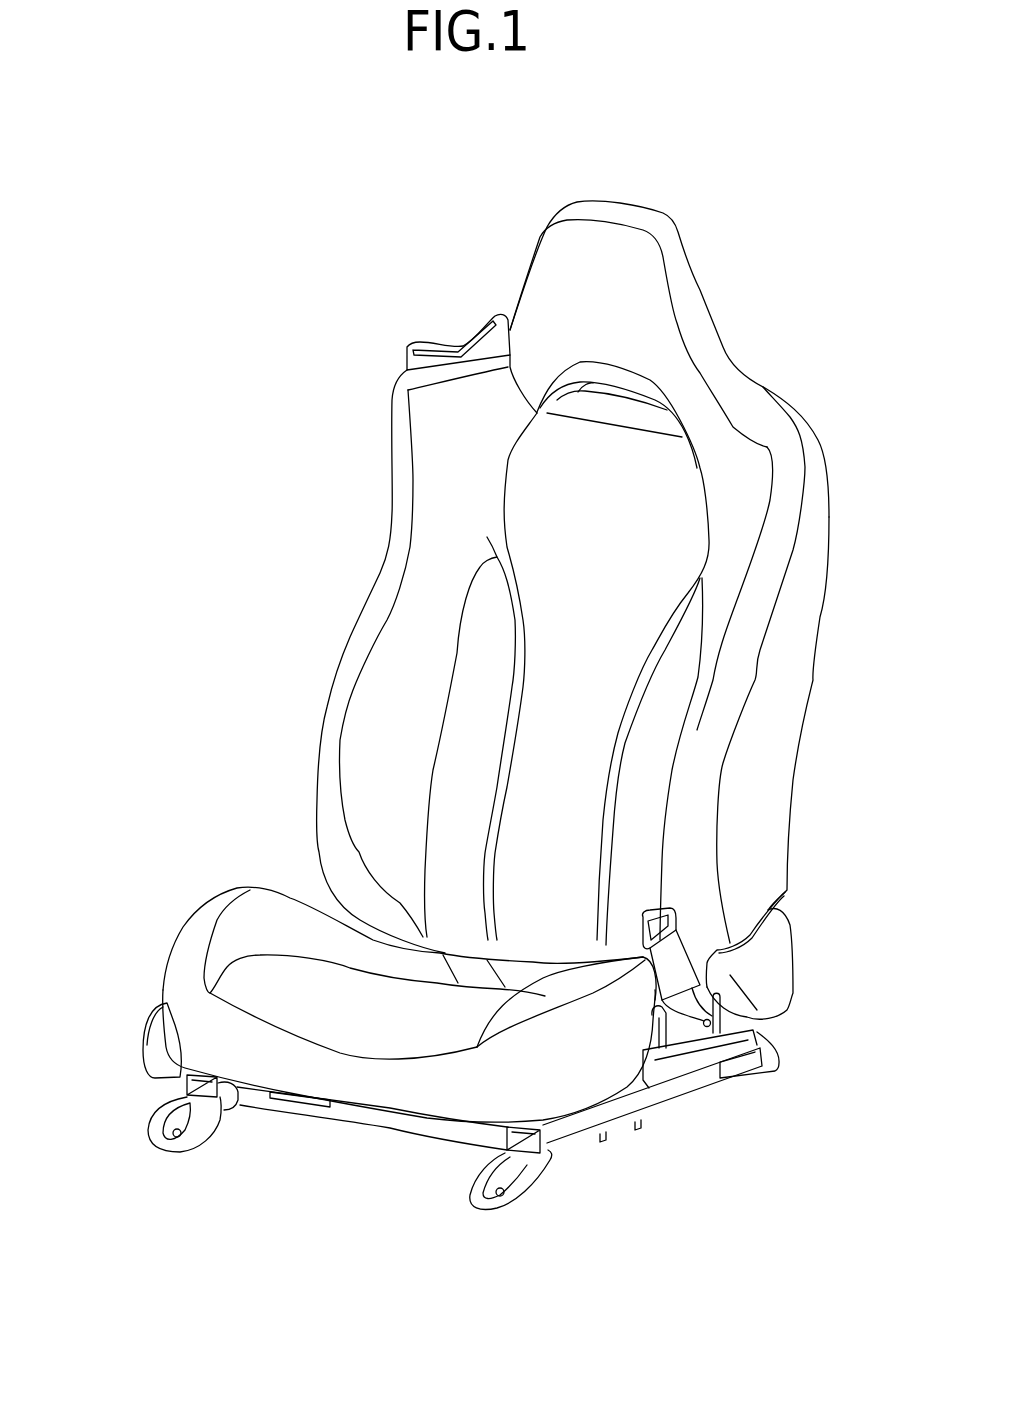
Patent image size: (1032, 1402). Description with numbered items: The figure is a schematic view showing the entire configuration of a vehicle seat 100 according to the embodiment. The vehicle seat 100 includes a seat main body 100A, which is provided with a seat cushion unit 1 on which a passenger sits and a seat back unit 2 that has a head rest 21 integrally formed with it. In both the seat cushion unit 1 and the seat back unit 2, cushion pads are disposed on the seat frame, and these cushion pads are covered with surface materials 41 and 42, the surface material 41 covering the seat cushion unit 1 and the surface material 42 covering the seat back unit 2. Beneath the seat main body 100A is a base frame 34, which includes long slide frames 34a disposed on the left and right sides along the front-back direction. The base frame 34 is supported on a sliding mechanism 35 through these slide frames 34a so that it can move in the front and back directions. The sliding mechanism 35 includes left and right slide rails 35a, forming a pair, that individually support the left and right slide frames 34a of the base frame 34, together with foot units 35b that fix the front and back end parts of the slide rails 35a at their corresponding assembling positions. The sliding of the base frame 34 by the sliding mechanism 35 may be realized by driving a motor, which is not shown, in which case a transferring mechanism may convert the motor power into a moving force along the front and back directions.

The vehicle seat 100 is at (455, 175).
The seat main body 100A is at (802, 728).
The seat cushion unit 1 is at (172, 921).
The seat back unit 2 is at (363, 508).
The head rest 21 is at (684, 274).
The surface material 41 is at (223, 890).
The surface material 42 is at (343, 653).
The base frame 34 is at (803, 1011).
The slide frame 34a is at (780, 1034).
The sliding mechanism 35 is at (90, 1103).
The slide rail 35a is at (157, 1107).
The foot unit 35b is at (168, 1153).